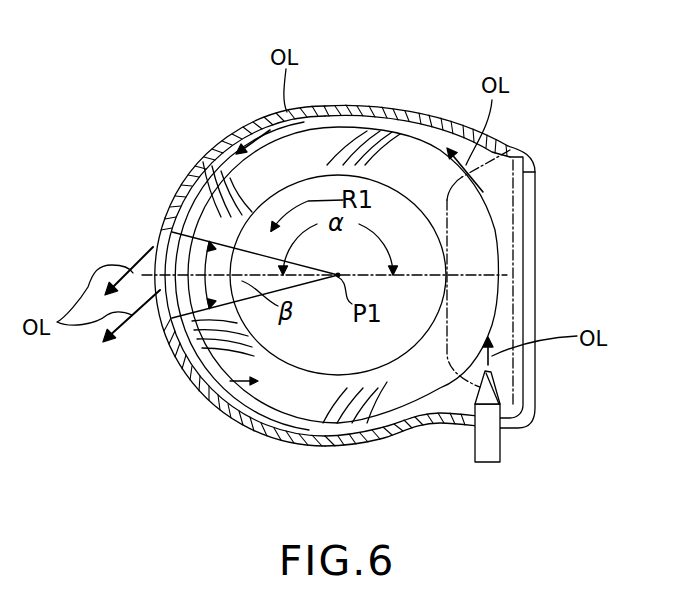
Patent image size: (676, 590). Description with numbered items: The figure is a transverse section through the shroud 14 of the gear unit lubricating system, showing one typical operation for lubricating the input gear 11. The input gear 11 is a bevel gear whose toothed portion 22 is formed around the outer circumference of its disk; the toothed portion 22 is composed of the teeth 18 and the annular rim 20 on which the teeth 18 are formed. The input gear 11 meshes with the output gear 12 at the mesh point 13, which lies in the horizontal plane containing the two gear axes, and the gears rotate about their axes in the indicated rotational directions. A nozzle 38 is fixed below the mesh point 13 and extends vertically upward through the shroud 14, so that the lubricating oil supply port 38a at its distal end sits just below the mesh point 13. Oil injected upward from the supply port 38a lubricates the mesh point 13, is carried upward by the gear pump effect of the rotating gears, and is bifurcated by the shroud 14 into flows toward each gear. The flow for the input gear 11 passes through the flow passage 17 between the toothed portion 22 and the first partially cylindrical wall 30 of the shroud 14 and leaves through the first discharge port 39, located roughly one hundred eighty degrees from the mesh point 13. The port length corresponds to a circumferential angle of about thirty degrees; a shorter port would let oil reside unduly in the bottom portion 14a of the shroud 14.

The input gear 11 is at (218, 395).
The output gear 12 is at (529, 218).
The mesh point 13 is at (500, 291).
The shroud 14 is at (416, 91).
The bottom portion of the shroud 14a is at (252, 430).
The flow passage 17 is at (338, 106).
The teeth 18 is at (223, 185).
The annular rim 20 is at (165, 219).
The toothed portion 22 is at (210, 249).
The first partially cylindrical wall 30 is at (243, 128).
The nozzle 38 is at (549, 431).
The lubricating oil supply port 38a is at (491, 371).
The first discharge port 39 is at (153, 235).